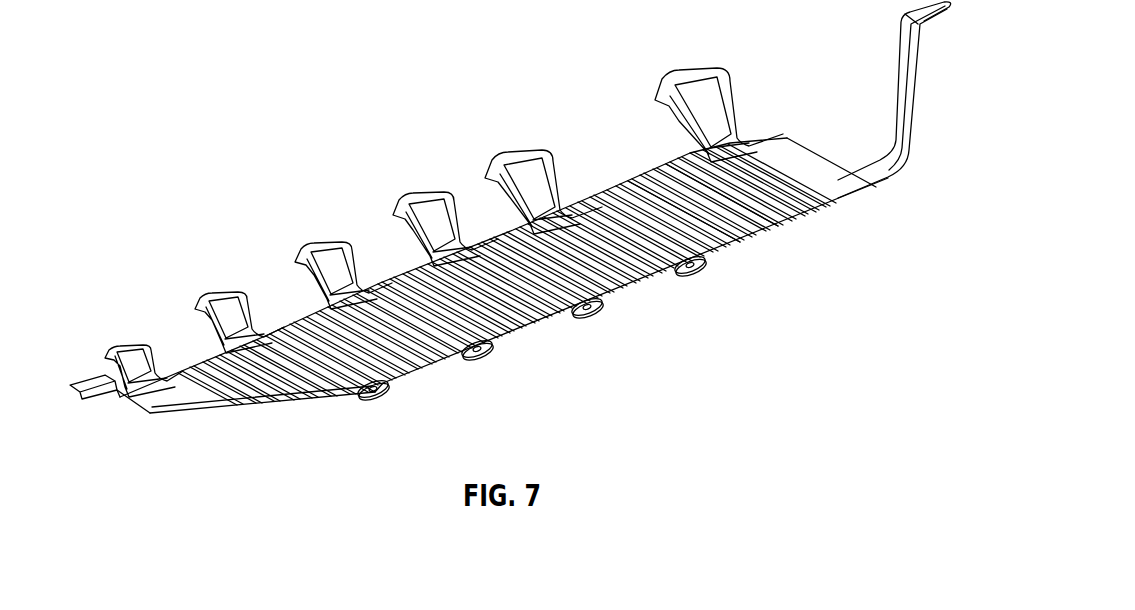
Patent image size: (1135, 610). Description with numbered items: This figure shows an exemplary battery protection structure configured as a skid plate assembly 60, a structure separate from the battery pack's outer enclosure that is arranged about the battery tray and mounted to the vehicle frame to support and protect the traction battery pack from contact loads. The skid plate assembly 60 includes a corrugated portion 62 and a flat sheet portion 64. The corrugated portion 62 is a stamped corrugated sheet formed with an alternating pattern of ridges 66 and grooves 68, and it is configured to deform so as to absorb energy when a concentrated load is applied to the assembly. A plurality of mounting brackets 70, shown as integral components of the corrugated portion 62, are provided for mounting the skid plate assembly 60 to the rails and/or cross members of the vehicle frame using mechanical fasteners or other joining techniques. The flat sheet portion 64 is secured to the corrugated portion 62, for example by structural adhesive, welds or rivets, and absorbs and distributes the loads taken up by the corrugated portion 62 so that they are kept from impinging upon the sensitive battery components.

The skid plate assembly 60 is at (186, 216).
The corrugated portion 62 is at (498, 256).
The flat sheet portion 64 is at (448, 362).
The ridges 66 is at (629, 188).
The grooves 68 is at (674, 190).
The mounting brackets 70 is at (118, 346).